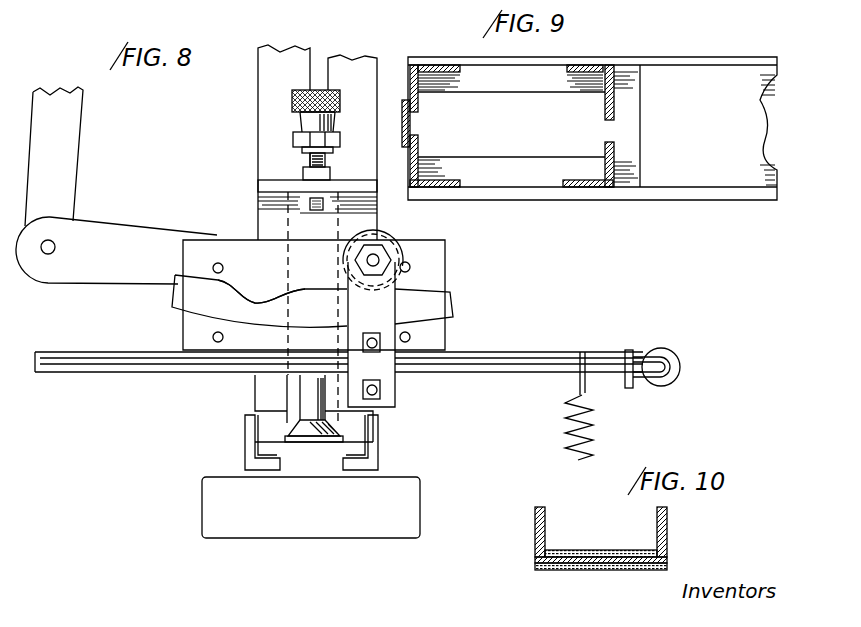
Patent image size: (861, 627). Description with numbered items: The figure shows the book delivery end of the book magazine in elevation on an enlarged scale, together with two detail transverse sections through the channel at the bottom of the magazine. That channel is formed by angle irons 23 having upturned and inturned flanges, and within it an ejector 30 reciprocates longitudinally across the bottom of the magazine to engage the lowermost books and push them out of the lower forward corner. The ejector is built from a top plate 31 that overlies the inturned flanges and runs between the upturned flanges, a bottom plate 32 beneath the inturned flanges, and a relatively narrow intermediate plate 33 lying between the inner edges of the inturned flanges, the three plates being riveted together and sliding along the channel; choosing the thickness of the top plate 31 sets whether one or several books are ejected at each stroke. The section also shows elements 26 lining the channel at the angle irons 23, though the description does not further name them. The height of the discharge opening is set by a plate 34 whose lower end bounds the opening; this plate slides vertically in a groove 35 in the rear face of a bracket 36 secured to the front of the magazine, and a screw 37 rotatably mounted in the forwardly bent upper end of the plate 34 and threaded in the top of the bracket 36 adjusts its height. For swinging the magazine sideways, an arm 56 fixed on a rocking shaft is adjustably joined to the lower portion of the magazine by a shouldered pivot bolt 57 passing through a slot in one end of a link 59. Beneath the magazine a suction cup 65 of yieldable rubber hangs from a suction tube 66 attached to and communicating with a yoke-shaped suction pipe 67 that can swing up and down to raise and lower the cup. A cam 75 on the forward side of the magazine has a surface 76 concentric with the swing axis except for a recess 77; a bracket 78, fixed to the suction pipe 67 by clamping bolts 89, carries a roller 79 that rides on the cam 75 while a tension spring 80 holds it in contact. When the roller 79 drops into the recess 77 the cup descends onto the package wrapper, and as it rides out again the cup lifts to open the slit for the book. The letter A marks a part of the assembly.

In FIG. 8, the angle irons 23 is at (247, 452).
In FIG. 9, the angle irons 23 is at (528, 160).
In FIG. 10, the angle irons 23 is at (658, 517).
In FIG. 9, the bearing strips 26 is at (436, 66).
In FIG. 9, the ejector 30 is at (677, 177).
In FIG. 10, the top plate 31 is at (608, 553).
In FIG. 10, the bottom plate 32 is at (617, 571).
In FIG. 10, the intermediate plate 33 is at (577, 563).
In FIG. 8, the plate 34 is at (296, 160).
In FIG. 9, the plate 34 is at (418, 115).
In FIG. 8, the groove 35 is at (352, 215).
In FIG. 8, the bracket 36 is at (258, 212).
In FIG. 8, the screw 37 is at (300, 152).
In FIG. 8, the arm 56 is at (63, 193).
In FIG. 8, the shouldered pivot bolt 57 is at (47, 254).
In FIG. 8, the link 59 is at (128, 237).
In FIG. 8, the suction cup 65 is at (340, 438).
In FIG. 8, the suction tube 66 is at (318, 400).
In FIG. 8, the suction pipe 67 is at (501, 364).
In FIG. 8, the cam 75 is at (440, 305).
In FIG. 8, the cam surface 76 is at (435, 278).
In FIG. 8, the recess 77 is at (250, 305).
In FIG. 8, the bracket 78 is at (397, 373).
In FIG. 8, the roller 79 is at (407, 252).
In FIG. 8, the tension spring 80 is at (590, 423).
In FIG. 8, the clamping bolts 89 is at (380, 345).
In FIG. 8, the base plate A is at (311, 507).